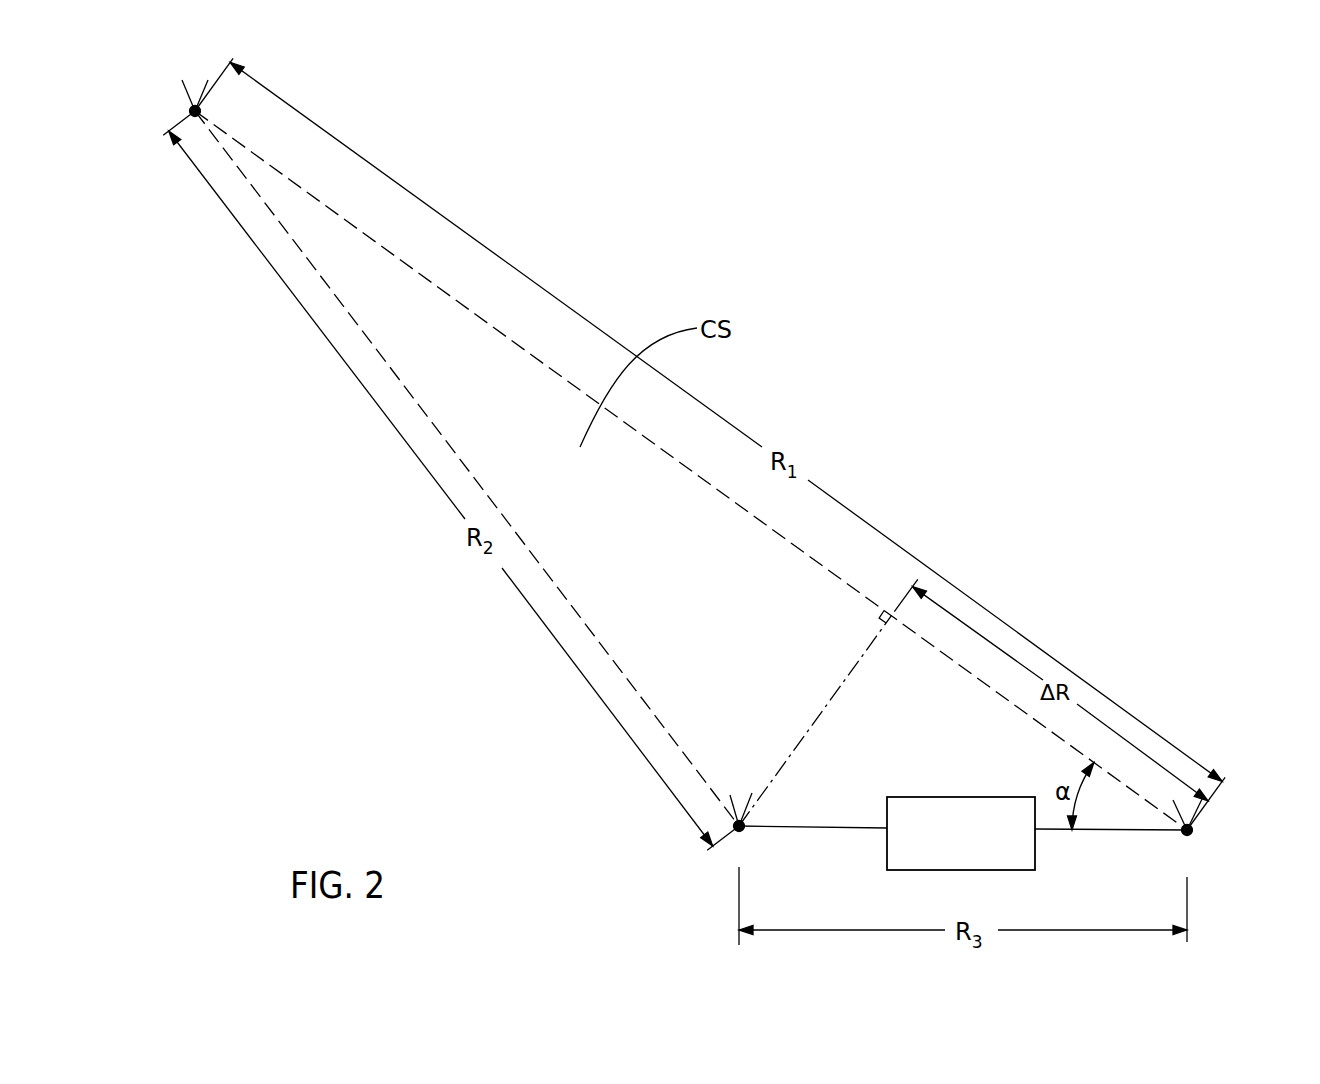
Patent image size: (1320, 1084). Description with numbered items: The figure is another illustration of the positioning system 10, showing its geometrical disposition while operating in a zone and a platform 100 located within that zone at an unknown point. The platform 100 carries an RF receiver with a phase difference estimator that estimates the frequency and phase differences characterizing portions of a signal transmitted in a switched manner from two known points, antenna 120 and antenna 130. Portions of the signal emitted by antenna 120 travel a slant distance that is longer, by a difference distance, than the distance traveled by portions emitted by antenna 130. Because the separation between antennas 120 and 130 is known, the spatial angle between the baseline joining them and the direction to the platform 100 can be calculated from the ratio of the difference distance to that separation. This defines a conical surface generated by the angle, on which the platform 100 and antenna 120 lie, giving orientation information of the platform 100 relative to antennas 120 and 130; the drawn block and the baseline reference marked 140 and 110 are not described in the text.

The positioning system 10 is at (1067, 368).
The platform 100 is at (195, 111).
The base line 110 is at (1162, 861).
The antenna 120 is at (1192, 831).
The antenna 130 is at (742, 829).
The evaluation unit 140 is at (1035, 852).